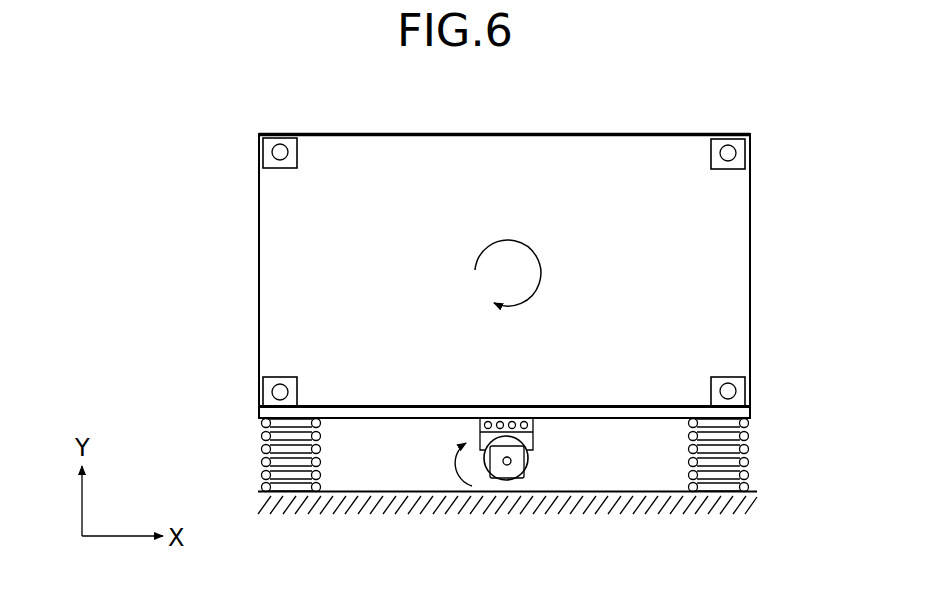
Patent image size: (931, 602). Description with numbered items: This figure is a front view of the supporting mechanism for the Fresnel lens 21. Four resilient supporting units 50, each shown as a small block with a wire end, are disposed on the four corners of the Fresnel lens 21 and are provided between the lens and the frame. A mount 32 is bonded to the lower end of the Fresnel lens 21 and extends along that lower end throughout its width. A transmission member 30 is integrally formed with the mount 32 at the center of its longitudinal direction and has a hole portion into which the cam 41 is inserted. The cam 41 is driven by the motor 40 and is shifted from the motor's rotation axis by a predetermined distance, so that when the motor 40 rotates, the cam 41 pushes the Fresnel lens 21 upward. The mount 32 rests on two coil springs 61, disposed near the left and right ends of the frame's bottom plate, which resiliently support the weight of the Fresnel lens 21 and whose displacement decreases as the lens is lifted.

The Fresnel lens 21 is at (720, 283).
The transmission member 30 is at (533, 440).
The mount 32 is at (643, 410).
The motor 40 is at (528, 460).
The cam 41 is at (507, 465).
The resilient supporting unit 50 is at (272, 156).
The coil spring 61 is at (280, 449).